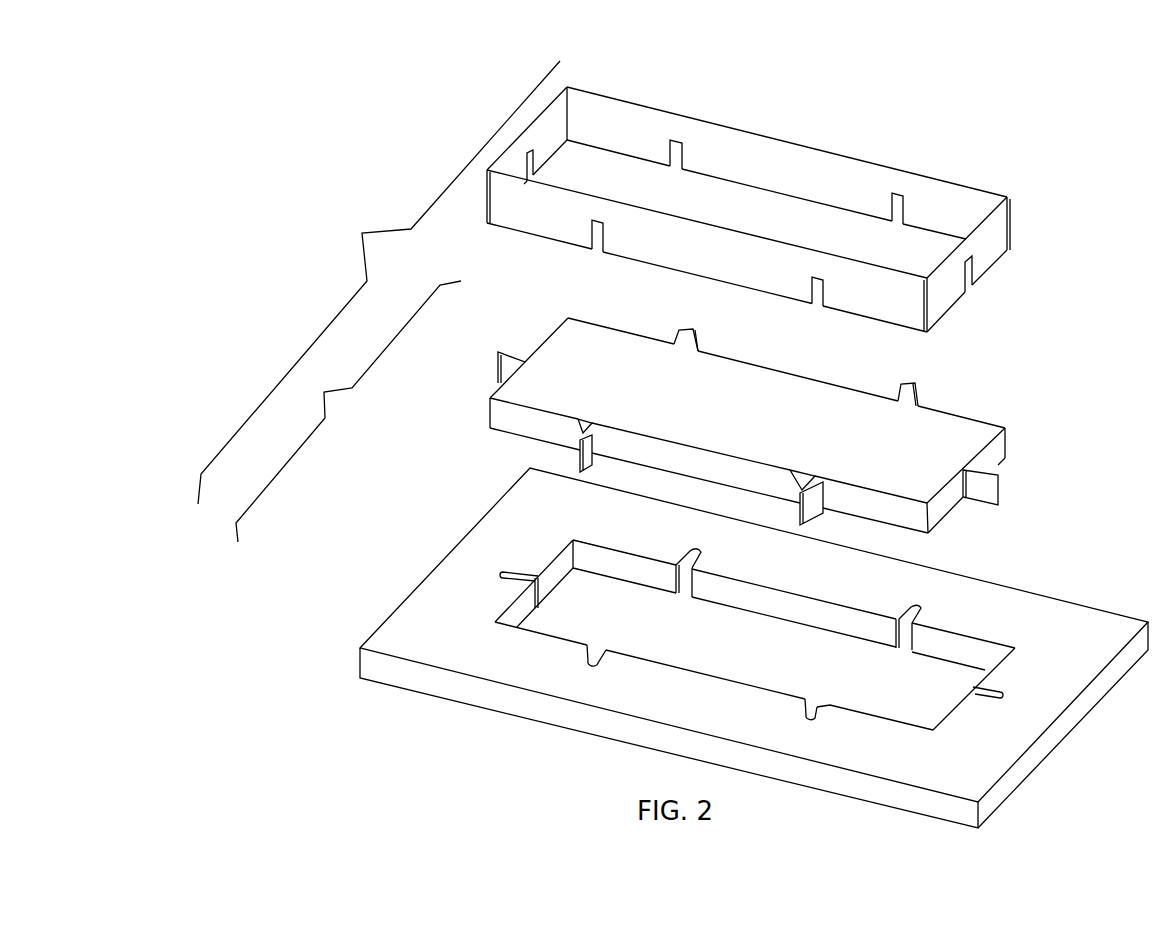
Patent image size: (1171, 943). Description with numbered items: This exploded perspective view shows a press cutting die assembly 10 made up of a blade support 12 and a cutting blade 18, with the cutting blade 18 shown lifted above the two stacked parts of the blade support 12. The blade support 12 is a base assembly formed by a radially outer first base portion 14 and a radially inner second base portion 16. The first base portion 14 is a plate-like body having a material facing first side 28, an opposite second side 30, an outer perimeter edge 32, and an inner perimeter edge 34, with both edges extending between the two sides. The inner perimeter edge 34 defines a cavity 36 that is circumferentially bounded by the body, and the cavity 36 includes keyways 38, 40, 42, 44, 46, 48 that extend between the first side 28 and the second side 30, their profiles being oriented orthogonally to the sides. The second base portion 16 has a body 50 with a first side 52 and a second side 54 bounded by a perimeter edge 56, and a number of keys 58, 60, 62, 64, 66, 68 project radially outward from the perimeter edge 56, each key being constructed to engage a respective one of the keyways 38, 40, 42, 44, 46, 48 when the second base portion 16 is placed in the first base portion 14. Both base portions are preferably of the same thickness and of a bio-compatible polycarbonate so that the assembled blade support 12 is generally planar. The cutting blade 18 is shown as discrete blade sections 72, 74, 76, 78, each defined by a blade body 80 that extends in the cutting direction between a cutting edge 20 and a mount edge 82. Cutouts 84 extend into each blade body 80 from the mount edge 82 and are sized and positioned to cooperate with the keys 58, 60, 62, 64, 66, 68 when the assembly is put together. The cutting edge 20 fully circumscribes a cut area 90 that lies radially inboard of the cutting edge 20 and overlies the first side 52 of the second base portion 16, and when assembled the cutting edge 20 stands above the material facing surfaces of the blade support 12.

The press cutting die assembly 10 is at (379, 282).
The blade support 12 is at (348, 411).
The first base portion 14 is at (426, 536).
The second base portion 16 is at (466, 370).
The cutting blade 18 is at (1036, 188).
The cutting edge 20 is at (826, 150).
The first side 28 is at (1076, 635).
The second side 30 is at (837, 797).
The outer perimeter edge 32 is at (1015, 778).
The inner perimeter edge 34 is at (932, 643).
The cavity 36 is at (680, 653).
The keyway 38 is at (585, 656).
The keyway 40 is at (503, 574).
The keyway 42 is at (698, 550).
The keyway 44 is at (917, 605).
The keyway 46 is at (990, 690).
The keyway 48 is at (813, 722).
The body 50 is at (706, 406).
The first side 52 is at (938, 433).
The second side 54 is at (950, 517).
The perimeter edge 56 is at (992, 448).
The key 58 is at (582, 432).
The key 60 is at (512, 350).
The key 62 is at (694, 333).
The key 64 is at (903, 385).
The key 66 is at (1000, 482).
The key 68 is at (800, 478).
The blade section 72 is at (996, 252).
The blade section 74 is at (691, 256).
The blade section 76 is at (537, 141).
The blade section 78 is at (751, 168).
The blade body 80 is at (501, 173).
The mount edge 82 is at (603, 152).
The cutout 84 is at (675, 148).
The cut area 90 is at (598, 115).